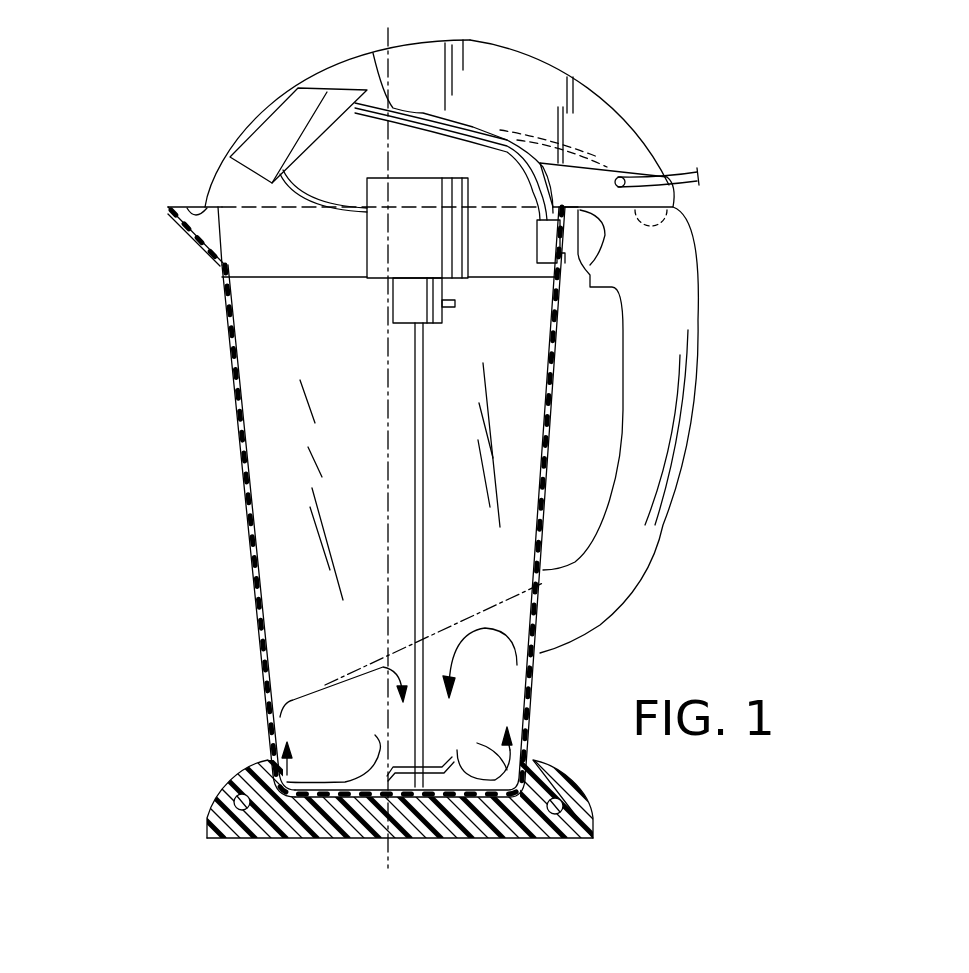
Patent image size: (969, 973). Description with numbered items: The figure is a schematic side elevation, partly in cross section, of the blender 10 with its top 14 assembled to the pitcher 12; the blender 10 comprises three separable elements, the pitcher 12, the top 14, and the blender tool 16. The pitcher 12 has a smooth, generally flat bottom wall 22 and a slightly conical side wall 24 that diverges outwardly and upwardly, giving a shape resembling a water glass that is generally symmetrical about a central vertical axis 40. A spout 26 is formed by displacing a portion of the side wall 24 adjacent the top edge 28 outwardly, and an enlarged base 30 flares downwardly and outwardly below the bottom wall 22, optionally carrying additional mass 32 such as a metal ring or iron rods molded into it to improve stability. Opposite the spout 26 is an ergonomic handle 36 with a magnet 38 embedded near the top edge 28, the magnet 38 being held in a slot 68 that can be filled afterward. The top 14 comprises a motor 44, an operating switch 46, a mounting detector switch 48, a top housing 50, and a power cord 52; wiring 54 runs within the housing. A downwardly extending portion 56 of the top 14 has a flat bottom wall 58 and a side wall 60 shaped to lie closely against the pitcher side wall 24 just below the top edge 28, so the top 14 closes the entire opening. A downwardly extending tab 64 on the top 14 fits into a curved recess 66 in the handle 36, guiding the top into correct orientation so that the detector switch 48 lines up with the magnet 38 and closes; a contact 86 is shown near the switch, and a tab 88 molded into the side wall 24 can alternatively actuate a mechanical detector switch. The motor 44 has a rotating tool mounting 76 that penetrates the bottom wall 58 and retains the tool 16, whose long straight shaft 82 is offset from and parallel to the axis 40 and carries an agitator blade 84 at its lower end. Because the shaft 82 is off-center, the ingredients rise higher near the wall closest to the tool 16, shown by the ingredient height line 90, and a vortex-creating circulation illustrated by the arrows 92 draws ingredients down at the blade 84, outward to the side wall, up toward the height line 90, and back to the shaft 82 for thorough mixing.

The blender 10 is at (173, 432).
The pitcher 12 is at (258, 662).
The top 14 is at (537, 58).
The blender tool 16 is at (415, 497).
The bottom wall 22 is at (187, 207).
The side wall 24 is at (262, 612).
The spout 26 is at (188, 228).
The top edge 28 is at (173, 208).
The base 30 is at (237, 773).
The additional mass 32 is at (234, 799).
The handle 36 is at (693, 405).
The magnet 38 is at (580, 247).
The central vertical axis 40 is at (391, 37).
The motor 44 is at (434, 253).
The operating switch 46 is at (268, 112).
The mounting detector switch 48 is at (535, 233).
The top housing 50 is at (607, 97).
The power cord 52 is at (680, 173).
The wires 54 is at (320, 137).
The downwardly extending portion 56 is at (336, 253).
The bottom wall 58 is at (337, 280).
The side wall 60 is at (213, 228).
The tab 64 is at (650, 205).
The recess 66 is at (663, 220).
The slot 68 is at (575, 212).
The tool mounting 76 is at (437, 327).
The shaft 82 is at (423, 580).
The agitator blade 84 is at (430, 765).
The contact 86 is at (557, 264).
The tab 88 is at (565, 287).
The ingredient height line 90 is at (298, 683).
The arrows 92 is at (503, 745).